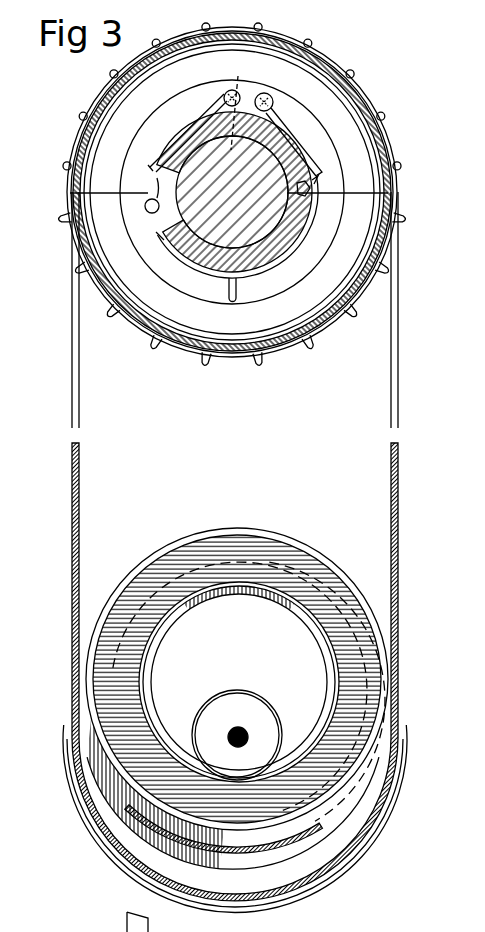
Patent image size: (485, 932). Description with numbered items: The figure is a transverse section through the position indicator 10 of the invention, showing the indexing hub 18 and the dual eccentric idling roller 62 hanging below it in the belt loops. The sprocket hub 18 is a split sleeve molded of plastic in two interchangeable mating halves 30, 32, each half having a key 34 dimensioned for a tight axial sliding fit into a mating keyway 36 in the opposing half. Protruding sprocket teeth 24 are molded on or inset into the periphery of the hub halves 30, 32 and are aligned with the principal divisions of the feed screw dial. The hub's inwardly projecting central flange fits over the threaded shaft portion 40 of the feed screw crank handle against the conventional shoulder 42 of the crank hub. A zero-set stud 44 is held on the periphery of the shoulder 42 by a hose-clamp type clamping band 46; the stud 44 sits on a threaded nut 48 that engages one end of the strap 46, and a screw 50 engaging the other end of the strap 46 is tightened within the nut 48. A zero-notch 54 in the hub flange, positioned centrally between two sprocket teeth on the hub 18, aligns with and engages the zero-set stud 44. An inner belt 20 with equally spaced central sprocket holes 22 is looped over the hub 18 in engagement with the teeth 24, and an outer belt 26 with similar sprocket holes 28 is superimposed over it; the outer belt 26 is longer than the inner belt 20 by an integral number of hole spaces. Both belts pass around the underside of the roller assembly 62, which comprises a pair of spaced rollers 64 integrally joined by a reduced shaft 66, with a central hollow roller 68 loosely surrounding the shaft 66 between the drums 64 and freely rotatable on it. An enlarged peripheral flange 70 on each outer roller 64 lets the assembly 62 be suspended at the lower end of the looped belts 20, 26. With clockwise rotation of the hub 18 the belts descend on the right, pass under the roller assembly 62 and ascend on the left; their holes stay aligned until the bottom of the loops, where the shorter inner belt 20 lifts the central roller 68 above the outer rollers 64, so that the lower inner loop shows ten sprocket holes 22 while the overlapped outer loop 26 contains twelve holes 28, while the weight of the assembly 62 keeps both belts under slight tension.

The indicator 10 is at (57, 334).
The indexing hub 18 is at (138, 335).
The inner belt 20 is at (81, 418).
The sprocket holes 22 is at (83, 512).
The sprocket teeth 24 is at (386, 118).
The outer belt 26 is at (72, 436).
The sprocket holes 28 is at (77, 512).
The hub half 30 is at (316, 74).
The hub half 32 is at (343, 282).
The key 34 is at (157, 190).
The keyway 36 is at (318, 180).
The threaded shaft portion 40 is at (264, 220).
The shoulder 42 is at (270, 139).
The zero-set stud 44 is at (232, 192).
The clamping band 46 is at (153, 166).
The threaded nut 48 is at (226, 107).
The screw 50 is at (252, 94).
The zero-notch 54 is at (239, 78).
The dual eccentric idling roller 62 is at (289, 527).
The rollers 64 is at (128, 834).
The reduced shaft 66 is at (218, 712).
The central hollow roller 68 is at (231, 546).
The peripheral flange 70 is at (80, 790).